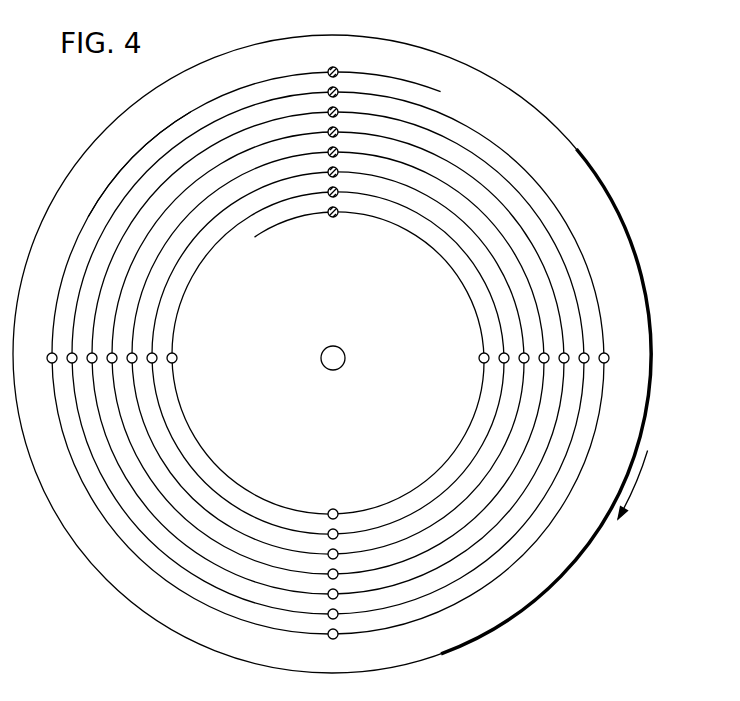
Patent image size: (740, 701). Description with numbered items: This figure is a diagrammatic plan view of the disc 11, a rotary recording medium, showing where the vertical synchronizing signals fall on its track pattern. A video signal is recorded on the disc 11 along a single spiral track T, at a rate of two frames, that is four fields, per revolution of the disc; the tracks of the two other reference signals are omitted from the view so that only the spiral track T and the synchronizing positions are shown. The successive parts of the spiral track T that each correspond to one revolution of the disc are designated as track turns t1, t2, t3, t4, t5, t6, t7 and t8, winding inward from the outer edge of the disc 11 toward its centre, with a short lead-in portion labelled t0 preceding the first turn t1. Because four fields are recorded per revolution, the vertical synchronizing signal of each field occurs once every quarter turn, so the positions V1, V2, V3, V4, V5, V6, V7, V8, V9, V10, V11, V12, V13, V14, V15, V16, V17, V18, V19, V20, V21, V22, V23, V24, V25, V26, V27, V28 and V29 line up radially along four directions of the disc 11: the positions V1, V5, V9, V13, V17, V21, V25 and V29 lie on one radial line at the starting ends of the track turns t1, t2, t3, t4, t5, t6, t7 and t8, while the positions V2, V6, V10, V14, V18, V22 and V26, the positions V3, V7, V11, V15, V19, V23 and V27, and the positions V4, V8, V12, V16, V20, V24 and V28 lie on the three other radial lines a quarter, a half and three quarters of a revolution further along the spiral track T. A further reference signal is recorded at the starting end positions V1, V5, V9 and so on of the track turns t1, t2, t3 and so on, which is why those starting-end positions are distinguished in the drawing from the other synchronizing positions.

The disc 11 is at (620, 232).
The spiral track T is at (158, 134).
The lead-in track segment t0 is at (412, 82).
The track turn t1 is at (226, 94).
The track turn t2 is at (273, 100).
The track turn t3 is at (211, 146).
The track turn t4 is at (178, 197).
The track turn t5 is at (224, 186).
The track turn t6 is at (201, 231).
The track turn t7 is at (186, 289).
The track turn t8 is at (286, 221).
The vertical synchronizing signal position V1 is at (337, 69).
The vertical synchronizing signal position V2 is at (46, 358).
The vertical synchronizing signal position V3 is at (328, 632).
The vertical synchronizing signal position V4 is at (608, 355).
The vertical synchronizing signal position V5 is at (338, 92).
The vertical synchronizing signal position V6 is at (71, 364).
The vertical synchronizing signal position V7 is at (328, 612).
The vertical synchronizing signal position V8 is at (588, 362).
The vertical synchronizing signal position V9 is at (338, 112).
The vertical synchronizing signal position V10 is at (89, 355).
The vertical synchronizing signal position V11 is at (328, 592).
The vertical synchronizing signal position V12 is at (567, 353).
The vertical synchronizing signal position V13 is at (338, 132).
The vertical synchronizing signal position V14 is at (109, 363).
The vertical synchronizing signal position V15 is at (328, 572).
The vertical synchronizing signal position V16 is at (542, 353).
The vertical synchronizing signal position V17 is at (338, 152).
The vertical synchronizing signal position V18 is at (136, 355).
The vertical synchronizing signal position V19 is at (328, 552).
The vertical synchronizing signal position V20 is at (521, 363).
The vertical synchronizing signal position V21 is at (338, 172).
The vertical synchronizing signal position V22 is at (155, 362).
The vertical synchronizing signal position V23 is at (328, 532).
The vertical synchronizing signal position V24 is at (501, 363).
The vertical synchronizing signal position V25 is at (338, 192).
The vertical synchronizing signal position V26 is at (177, 358).
The vertical synchronizing signal position V27 is at (336, 509).
The vertical synchronizing signal position V28 is at (479, 358).
The vertical synchronizing signal position V29 is at (333, 218).